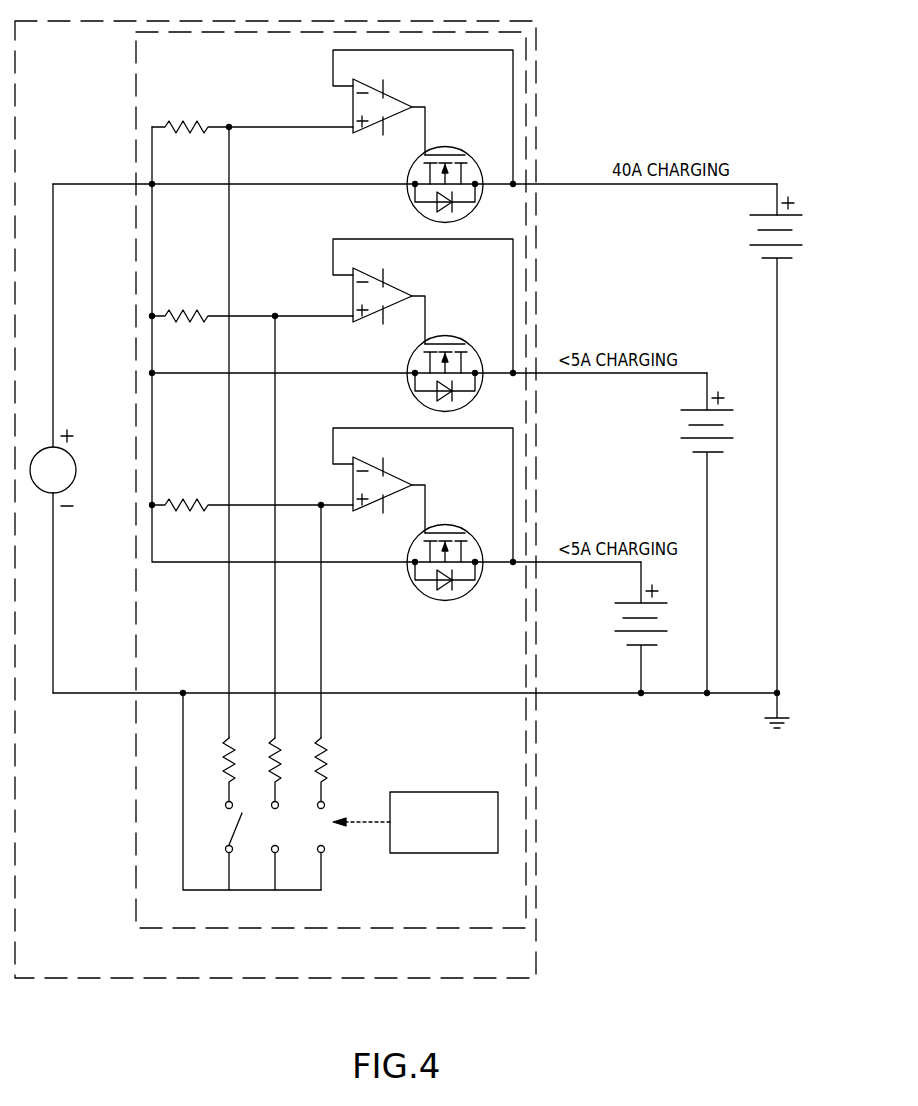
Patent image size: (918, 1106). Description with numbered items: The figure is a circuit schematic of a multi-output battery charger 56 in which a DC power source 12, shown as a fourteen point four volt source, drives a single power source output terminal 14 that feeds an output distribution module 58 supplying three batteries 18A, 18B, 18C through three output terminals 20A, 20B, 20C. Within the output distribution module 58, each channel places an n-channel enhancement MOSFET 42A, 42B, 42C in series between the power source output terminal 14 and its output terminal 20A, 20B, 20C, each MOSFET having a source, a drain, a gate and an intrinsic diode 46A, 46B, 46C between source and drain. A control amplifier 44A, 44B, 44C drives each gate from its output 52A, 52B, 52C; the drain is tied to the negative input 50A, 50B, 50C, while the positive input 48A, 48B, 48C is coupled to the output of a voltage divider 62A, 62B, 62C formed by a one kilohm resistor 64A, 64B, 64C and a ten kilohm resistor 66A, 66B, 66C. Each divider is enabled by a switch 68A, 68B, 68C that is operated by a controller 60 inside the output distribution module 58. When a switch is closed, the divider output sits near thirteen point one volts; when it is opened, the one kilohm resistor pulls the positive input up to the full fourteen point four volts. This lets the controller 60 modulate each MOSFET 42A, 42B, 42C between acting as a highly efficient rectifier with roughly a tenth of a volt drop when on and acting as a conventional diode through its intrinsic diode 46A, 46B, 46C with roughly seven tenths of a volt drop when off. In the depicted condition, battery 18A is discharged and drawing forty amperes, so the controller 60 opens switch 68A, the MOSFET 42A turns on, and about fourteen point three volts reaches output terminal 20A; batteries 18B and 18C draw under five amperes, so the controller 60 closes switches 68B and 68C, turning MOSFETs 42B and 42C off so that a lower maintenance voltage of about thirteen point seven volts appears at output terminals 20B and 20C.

The DC power source 12 is at (70, 452).
The power source output terminal 14 is at (105, 183).
The battery 18A is at (771, 262).
The battery 18B is at (700, 456).
The battery 18C is at (634, 648).
The output terminal 20A is at (727, 188).
The output terminal 20B is at (658, 378).
The output terminal 20C is at (606, 566).
The MOSFET 42A is at (452, 150).
The MOSFET 42B is at (452, 339).
The MOSFET 42C is at (452, 528).
The control amplifier 44A is at (398, 108).
The control amplifier 44B is at (398, 297).
The control amplifier 44C is at (398, 486).
The intrinsic diode 46A is at (425, 210).
The intrinsic diode 46B is at (425, 399).
The intrinsic diode 46C is at (425, 588).
The positive input 48A is at (345, 130).
The positive input 48B is at (345, 319).
The positive input 48C is at (345, 508).
The negative input 50A is at (344, 92).
The negative input 50B is at (344, 281).
The negative input 50C is at (344, 470).
The output 52A is at (426, 112).
The output 52B is at (426, 301).
The output 52C is at (426, 490).
The battery charger 56 is at (80, 980).
The output distribution module 58 is at (208, 930).
The controller 60 is at (428, 792).
The voltage divider 62A is at (230, 116).
The voltage divider 62B is at (275, 305).
The voltage divider 62C is at (312, 518).
The resistor 64A is at (187, 125).
The resistor 64B is at (187, 314).
The resistor 64C is at (187, 503).
The resistor 66A is at (229, 745).
The resistor 66B is at (275, 745).
The resistor 66C is at (321, 752).
The switch 68A is at (236, 820).
The switch 68B is at (275, 828).
The switch 68C is at (321, 832).